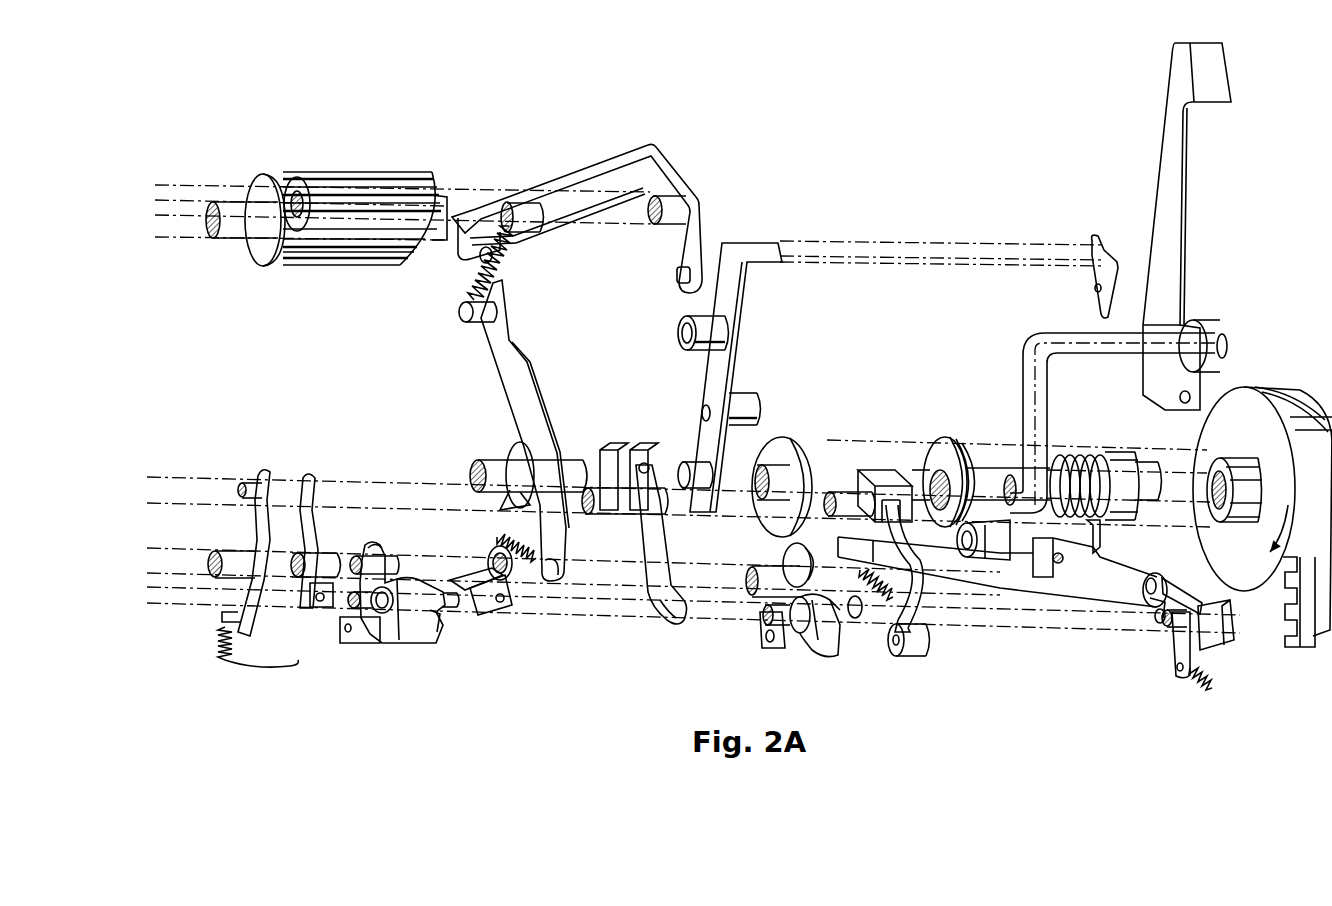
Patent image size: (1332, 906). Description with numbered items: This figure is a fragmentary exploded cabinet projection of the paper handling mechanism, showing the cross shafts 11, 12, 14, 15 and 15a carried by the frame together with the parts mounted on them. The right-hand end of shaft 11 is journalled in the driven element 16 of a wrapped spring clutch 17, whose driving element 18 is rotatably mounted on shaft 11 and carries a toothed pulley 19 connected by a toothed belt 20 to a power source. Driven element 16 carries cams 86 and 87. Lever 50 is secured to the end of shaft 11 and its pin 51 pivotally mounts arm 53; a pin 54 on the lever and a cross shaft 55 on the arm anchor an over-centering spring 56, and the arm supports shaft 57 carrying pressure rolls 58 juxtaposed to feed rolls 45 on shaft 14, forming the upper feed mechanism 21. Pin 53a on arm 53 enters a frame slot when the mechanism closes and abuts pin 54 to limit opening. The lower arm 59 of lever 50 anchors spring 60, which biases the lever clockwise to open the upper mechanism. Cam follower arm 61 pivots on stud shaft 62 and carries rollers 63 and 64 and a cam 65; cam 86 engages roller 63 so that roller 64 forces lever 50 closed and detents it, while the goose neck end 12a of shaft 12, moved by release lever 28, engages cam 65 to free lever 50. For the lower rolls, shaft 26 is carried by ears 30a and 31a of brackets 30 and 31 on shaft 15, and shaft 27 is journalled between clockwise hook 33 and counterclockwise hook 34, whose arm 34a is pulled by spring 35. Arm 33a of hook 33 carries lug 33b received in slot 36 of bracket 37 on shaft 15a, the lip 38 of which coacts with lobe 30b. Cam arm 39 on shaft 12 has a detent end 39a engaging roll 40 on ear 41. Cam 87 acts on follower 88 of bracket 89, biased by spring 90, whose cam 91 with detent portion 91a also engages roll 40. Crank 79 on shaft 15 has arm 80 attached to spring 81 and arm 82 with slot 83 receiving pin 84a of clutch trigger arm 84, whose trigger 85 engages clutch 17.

The cross shaft 11 is at (572, 462).
The cross shaft 12 is at (605, 503).
The goose neck end 12a is at (1049, 340).
The cross shaft 14 is at (237, 240).
The cross shaft 15 is at (1162, 620).
The cross shaft 15a is at (332, 552).
The driven element 16 is at (935, 450).
The wrapped spring clutch 17 is at (1079, 448).
The driving element 18 is at (1118, 458).
The toothed pulley 19 is at (1252, 432).
The toothed belt 20 is at (1283, 615).
The upper feed mechanism 21 is at (284, 176).
The shaft 26 is at (752, 570).
The shaft 27 is at (250, 482).
The release lever 28 is at (1180, 143).
The bracket 30 is at (383, 588).
The ear 30a is at (378, 545).
The lobe 30b is at (432, 615).
The bracket 31 is at (843, 630).
The ear 31a is at (787, 560).
The clockwise hook 33 is at (294, 541).
The downwardly extending arm 33a is at (298, 585).
The lug 33b is at (318, 610).
The counterclockwise hook 34 is at (217, 537).
The arm 34a is at (222, 615).
The spring 35 is at (259, 658).
The slot 36 is at (483, 608).
The bracket 37 is at (505, 600).
The lip 38 is at (465, 575).
The cam arm 39 is at (664, 560).
The detent end 39a is at (676, 622).
The roll 40 is at (928, 640).
The ear 41 is at (349, 638).
The feed rolls 45 is at (258, 255).
The lever 50 is at (518, 372).
The pin 51 is at (478, 257).
The arm 53 is at (612, 160).
The pin 53a is at (462, 250).
The pin 54 is at (467, 322).
The cross shaft 55 is at (525, 225).
The over-centering spring 56 is at (505, 252).
The shaft 57 is at (298, 192).
The pressure rolls 58 is at (450, 160).
The arm 59 is at (558, 552).
The spring 60 is at (505, 535).
The cam follower arm 61 is at (720, 362).
The stud shaft 62 is at (687, 467).
The roller 63 is at (750, 412).
The roller 64 is at (700, 350).
The cam 65 is at (1093, 290).
The crank 79 is at (1213, 612).
The arm 80 is at (1173, 643).
The spring 81 is at (1190, 680).
The arm 82 is at (1153, 575).
The slot 83 is at (1148, 575).
The clutch trigger arm 84 is at (982, 574).
The pin 84a is at (1160, 593).
The trigger 85 is at (1100, 547).
The cam 86 is at (787, 442).
The cam 87 is at (948, 437).
The follower 88 is at (987, 557).
The bracket 89 is at (887, 463).
The spring 90 is at (876, 592).
The cam 91 is at (928, 568).
The detent portion 91a is at (915, 625).